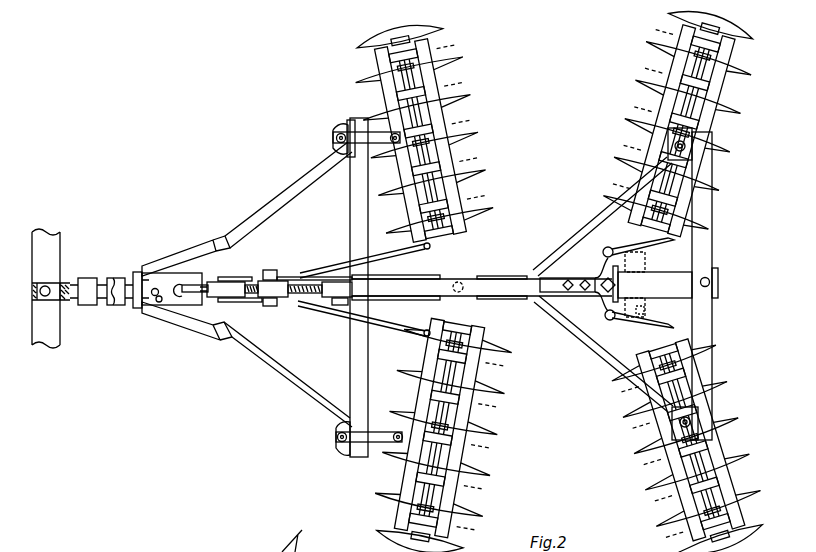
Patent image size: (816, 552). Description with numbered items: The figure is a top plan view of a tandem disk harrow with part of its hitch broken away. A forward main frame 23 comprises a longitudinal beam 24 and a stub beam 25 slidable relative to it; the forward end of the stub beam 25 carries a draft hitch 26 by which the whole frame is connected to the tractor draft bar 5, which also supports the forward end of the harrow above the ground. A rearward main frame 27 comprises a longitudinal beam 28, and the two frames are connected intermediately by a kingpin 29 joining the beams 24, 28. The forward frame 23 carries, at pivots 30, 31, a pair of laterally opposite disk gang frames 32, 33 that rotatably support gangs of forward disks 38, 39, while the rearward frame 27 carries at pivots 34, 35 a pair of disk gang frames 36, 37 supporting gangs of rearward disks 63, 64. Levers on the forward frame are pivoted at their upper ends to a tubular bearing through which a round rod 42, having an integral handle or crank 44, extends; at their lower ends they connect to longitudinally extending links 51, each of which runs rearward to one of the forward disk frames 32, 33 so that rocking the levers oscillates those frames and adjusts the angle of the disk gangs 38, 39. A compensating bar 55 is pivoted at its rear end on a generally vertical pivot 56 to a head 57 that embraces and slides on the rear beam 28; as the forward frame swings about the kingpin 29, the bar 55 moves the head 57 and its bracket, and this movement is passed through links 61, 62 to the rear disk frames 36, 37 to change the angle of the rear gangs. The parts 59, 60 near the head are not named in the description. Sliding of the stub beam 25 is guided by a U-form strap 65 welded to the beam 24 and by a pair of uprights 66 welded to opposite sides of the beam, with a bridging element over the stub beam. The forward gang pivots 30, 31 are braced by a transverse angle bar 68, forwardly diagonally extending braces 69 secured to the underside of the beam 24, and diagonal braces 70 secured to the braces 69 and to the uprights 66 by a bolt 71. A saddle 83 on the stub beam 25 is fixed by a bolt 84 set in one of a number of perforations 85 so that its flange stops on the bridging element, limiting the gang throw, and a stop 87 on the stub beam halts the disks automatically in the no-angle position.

The tractor draft bar 5 is at (60, 337).
The forward main frame 23 is at (350, 212).
The longitudinal beam 24 is at (392, 279).
The stub beam 25 is at (90, 305).
The draft hitch 26 is at (56, 300).
The rearward main frame 27 is at (714, 252).
The longitudinal beam 28 is at (508, 277).
The kingpin 29 is at (462, 281).
The pivot 30 is at (394, 143).
The pivot 31 is at (392, 432).
The forward disk gang frame 32 is at (461, 121).
The forward disk gang frame 33 is at (470, 383).
The pivot 34 is at (690, 150).
The pivot 35 is at (694, 421).
The rearward disk gang frame 36 is at (724, 94).
The rearward disk gang frame 37 is at (734, 469).
The forward disks 38 is at (472, 176).
The forward disks 39 is at (480, 401).
The round rod 42 is at (300, 278).
The handle or crank 44 is at (203, 280).
The longitudinally extending links 51 is at (393, 256).
The compensating bar 55 is at (502, 297).
The pivot 56 is at (655, 285).
The head 57 is at (597, 272).
The upper strut pivot 59 is at (603, 252).
The lower strut pivot 60 is at (605, 315).
The link 61 is at (649, 265).
The link 62 is at (650, 306).
The rearward disks 63 is at (728, 119).
The rearward disks 64 is at (736, 446).
The strap 65 is at (345, 305).
The uprights 66 is at (134, 275).
The transverse angle bar 68 is at (352, 349).
The forwardly diagonally extending braces 69 is at (275, 240).
The diagonal braces 70 is at (183, 253).
The bolt 71 is at (140, 310).
The saddle 83 is at (202, 303).
The bolt 84 is at (190, 285).
The perforations 85 is at (157, 286).
The stop 87 is at (100, 278).